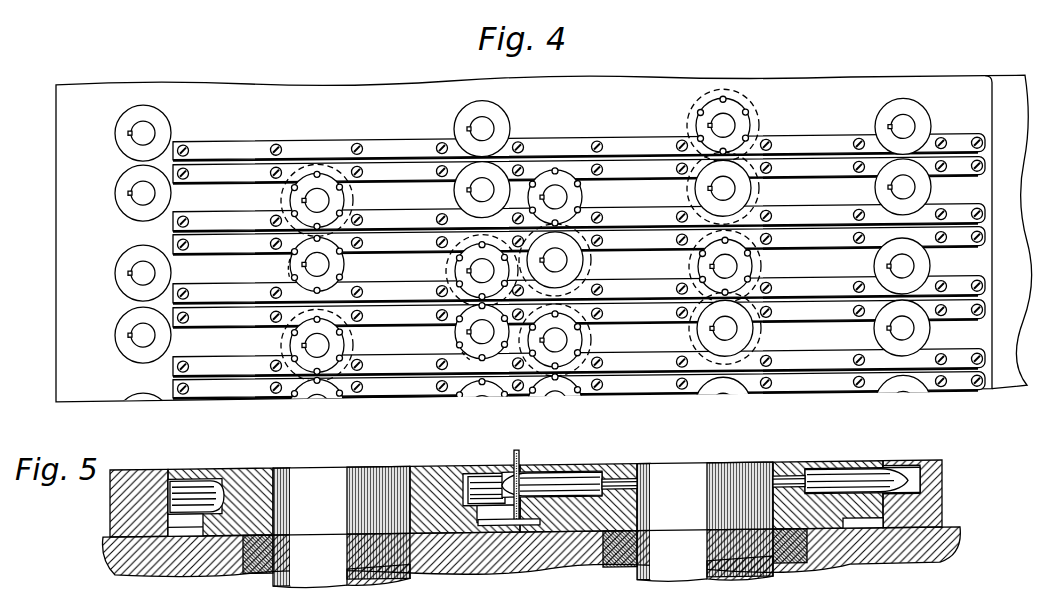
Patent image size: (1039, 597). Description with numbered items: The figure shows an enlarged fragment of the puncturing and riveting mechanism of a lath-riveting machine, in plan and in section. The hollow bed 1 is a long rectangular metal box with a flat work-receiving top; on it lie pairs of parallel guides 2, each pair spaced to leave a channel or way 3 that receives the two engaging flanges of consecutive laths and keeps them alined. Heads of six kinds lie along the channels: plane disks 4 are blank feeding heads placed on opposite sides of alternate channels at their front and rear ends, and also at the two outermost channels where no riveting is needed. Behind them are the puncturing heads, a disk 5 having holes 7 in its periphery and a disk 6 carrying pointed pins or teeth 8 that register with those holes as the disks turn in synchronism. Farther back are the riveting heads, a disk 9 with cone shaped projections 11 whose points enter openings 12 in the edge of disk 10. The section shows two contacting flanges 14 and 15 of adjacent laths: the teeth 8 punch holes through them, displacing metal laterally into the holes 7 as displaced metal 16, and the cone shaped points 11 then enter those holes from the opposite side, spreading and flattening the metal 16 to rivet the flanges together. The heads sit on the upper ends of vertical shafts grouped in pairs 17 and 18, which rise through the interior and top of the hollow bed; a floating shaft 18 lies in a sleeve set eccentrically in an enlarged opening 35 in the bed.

In FIG. 5, the hollow bed 1 is at (886, 553).
In FIG. 4, the guides 2 is at (843, 257).
In FIG. 5, the guides 2 is at (143, 470).
In FIG. 4, the channel or way 3 is at (815, 233).
In FIG. 4, the plane disks 4 is at (155, 178).
In FIG. 4, the puncturing disk 5 is at (581, 200).
In FIG. 5, the puncturing disk 5 is at (253, 470).
In FIG. 4, the toothed puncturing disk 6 is at (583, 268).
In FIG. 5, the toothed puncturing disk 6 is at (594, 476).
In FIG. 4, the holes 7 is at (695, 115).
In FIG. 5, the holes 7 is at (472, 489).
In FIG. 4, the pointed pins or teeth 8 is at (696, 209).
In FIG. 5, the pointed pins or teeth 8 is at (555, 492).
In FIG. 4, the riveting disk 9 is at (333, 200).
In FIG. 4, the riveting disk with openings 10 is at (341, 269).
In FIG. 4, the cone shaped projections 11 is at (292, 190).
In FIG. 4, the openings 12 is at (288, 274).
In FIG. 5, the flange 14 is at (514, 461).
In FIG. 5, the flange 15 is at (521, 462).
In FIG. 5, the displaced metal 16 is at (525, 563).
In FIG. 4, the vertical shaft 17 is at (140, 196).
In FIG. 5, the vertical shaft 17 is at (318, 481).
In FIG. 4, the vertical shaft 18 is at (138, 137).
In FIG. 5, the vertical shaft 18 is at (694, 479).
In FIG. 4, the opening in the bed 35 is at (1008, 231).